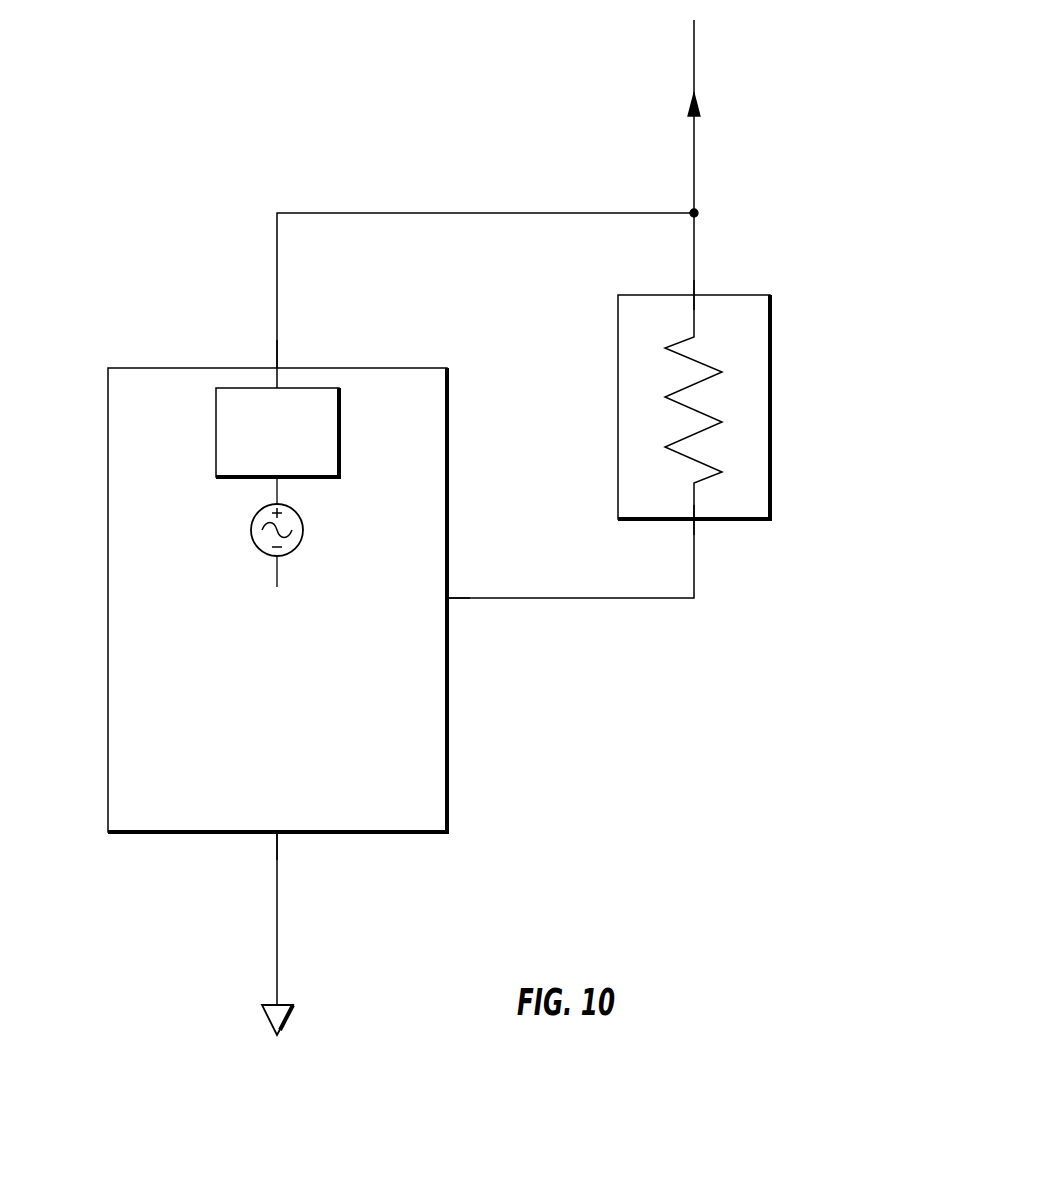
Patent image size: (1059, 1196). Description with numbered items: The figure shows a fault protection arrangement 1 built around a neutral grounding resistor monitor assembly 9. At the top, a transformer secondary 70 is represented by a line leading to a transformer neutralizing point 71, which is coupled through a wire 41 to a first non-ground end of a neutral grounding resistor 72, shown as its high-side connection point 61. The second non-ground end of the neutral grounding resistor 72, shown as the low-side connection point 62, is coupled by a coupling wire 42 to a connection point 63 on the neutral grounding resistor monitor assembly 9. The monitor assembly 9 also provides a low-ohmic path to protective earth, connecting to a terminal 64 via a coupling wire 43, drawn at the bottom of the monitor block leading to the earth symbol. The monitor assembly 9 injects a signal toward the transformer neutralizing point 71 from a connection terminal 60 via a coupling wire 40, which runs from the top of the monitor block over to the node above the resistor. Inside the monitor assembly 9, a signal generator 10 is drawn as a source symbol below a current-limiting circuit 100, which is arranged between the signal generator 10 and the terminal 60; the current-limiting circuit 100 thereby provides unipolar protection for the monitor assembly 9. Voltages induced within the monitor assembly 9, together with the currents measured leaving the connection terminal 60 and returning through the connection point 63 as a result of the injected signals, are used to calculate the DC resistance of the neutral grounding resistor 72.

The fault protection arrangement 1 is at (530, 833).
The neutral grounding resistor monitor assembly 9 is at (107, 598).
The signal generator 10 is at (252, 535).
The current-limiting circuit 100 is at (216, 447).
The coupling wire 40 is at (305, 212).
The wire 41 is at (695, 262).
The coupling wire 42 is at (700, 598).
The coupling wire 43 is at (276, 965).
The connection terminal 60 is at (275, 366).
The high-side connection point 61 is at (692, 294).
The low-side connection point 62 is at (692, 515).
The connection point 63 is at (450, 600).
The terminal 64 is at (276, 836).
The transformer secondary 70 is at (695, 62).
The transformer neutralizing point 71 is at (692, 97).
The neutral grounding resistor 72 is at (618, 467).